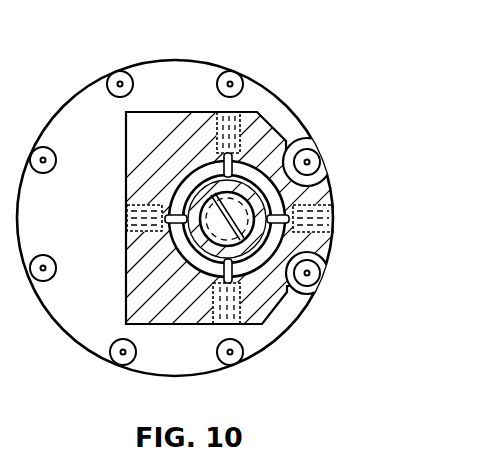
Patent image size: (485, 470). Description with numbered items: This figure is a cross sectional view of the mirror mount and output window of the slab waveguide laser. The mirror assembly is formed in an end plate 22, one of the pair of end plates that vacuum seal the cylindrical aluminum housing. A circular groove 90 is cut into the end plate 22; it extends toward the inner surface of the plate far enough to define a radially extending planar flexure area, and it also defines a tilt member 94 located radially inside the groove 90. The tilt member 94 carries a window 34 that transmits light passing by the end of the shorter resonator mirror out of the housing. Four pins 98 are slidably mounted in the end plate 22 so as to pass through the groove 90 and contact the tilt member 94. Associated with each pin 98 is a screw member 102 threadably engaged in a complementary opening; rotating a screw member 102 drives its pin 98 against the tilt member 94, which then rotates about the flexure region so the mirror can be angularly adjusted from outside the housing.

The end plate 22 is at (181, 60).
The circular groove 90 is at (254, 182).
The tilt member 94 is at (256, 165).
The window 34 is at (248, 212).
The pin 98 is at (236, 262).
The screw member 102 is at (334, 223).